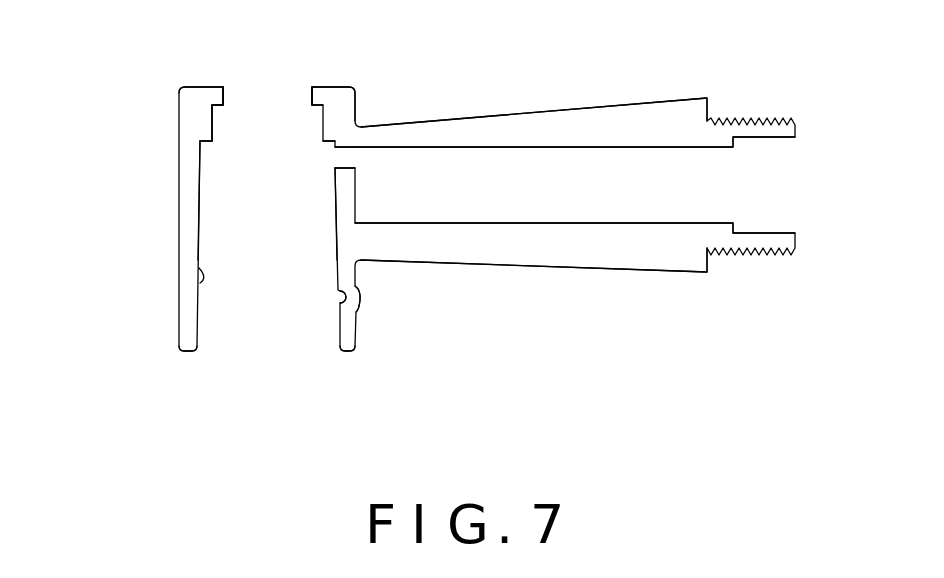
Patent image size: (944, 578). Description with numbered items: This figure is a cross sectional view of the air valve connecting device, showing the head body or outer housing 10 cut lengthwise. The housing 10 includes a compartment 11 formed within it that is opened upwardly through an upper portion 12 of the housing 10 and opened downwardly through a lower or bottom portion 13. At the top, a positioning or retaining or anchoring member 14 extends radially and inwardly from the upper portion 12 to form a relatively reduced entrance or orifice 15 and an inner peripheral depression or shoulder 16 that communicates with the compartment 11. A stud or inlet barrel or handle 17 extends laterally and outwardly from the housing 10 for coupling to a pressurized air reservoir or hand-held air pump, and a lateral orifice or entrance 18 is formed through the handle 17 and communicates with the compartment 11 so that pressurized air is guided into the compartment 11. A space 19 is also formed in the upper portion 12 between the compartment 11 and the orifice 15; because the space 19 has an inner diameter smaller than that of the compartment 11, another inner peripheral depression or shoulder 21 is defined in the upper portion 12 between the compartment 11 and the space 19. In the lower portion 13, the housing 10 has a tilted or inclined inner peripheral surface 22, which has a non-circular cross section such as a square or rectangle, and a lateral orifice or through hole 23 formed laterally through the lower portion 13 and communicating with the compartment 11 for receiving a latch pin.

The head body or outer housing 10 is at (183, 229).
The compartment 11 is at (228, 180).
The upper portion 12 is at (182, 90).
The lower or bottom portion 13 is at (185, 336).
The positioning or retaining or anchoring member 14 is at (322, 95).
The reduced entrance or passage or orifice 15 is at (293, 97).
The inner peripheral depression or recess or shoulder 16 is at (220, 107).
The stud or extension or inlet barrel or handle 17 is at (553, 122).
The lateral orifice or entrance 18 is at (345, 162).
The space 19 is at (213, 124).
The inner peripheral depression or recess or shoulder 21 is at (201, 142).
The tilted or inclined inner peripheral surface 22 is at (200, 283).
The lateral orifice or through hole 23 is at (342, 298).